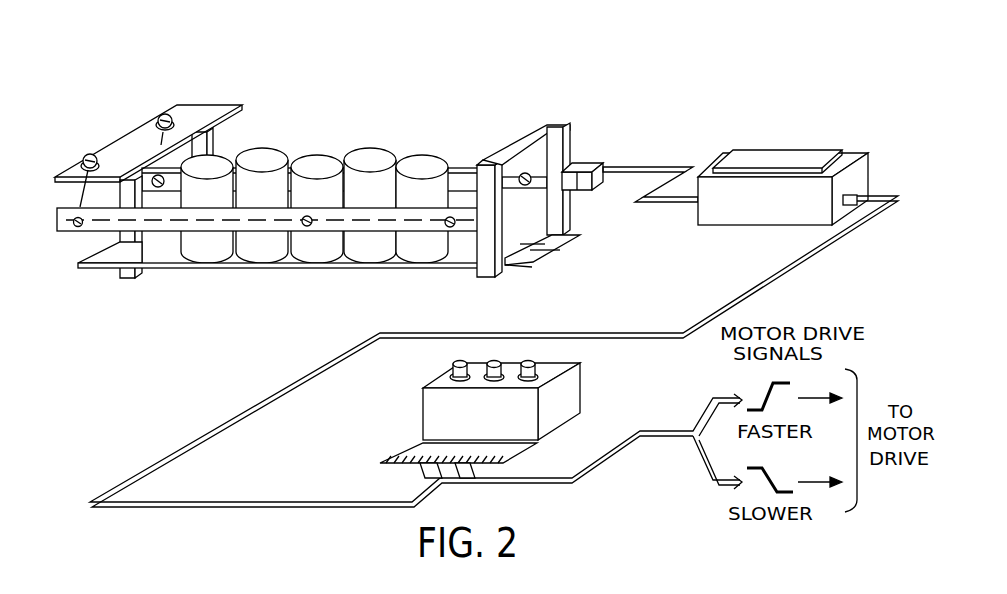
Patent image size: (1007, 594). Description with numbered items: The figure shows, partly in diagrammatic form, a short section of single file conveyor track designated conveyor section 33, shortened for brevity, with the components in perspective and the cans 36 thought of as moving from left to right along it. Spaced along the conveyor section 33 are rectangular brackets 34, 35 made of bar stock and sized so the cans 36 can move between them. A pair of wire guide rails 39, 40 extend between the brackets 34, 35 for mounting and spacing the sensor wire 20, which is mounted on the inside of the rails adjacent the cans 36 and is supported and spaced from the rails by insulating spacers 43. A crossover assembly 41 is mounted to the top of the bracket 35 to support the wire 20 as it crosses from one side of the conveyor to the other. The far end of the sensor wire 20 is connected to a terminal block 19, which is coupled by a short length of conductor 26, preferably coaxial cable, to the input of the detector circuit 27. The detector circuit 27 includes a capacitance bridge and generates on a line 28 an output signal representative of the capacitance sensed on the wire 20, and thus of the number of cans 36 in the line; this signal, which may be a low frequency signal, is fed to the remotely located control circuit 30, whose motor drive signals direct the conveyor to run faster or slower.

The terminal block 19 is at (590, 161).
The sensor wire 20 is at (186, 238).
The conductor 26 is at (649, 166).
The detector circuit 27 is at (857, 165).
The output line 28 is at (708, 316).
The control circuit 30 is at (423, 400).
The conveyor section 33 is at (301, 280).
The rectangular bracket 34 is at (496, 280).
The rectangular bracket 35 is at (128, 282).
The cans 36 is at (287, 152).
The wire guide rail 39 is at (58, 226).
The wire guide rail 40 is at (464, 176).
The crossover assembly 41 is at (207, 92).
The insulating spacers 43 is at (158, 120).